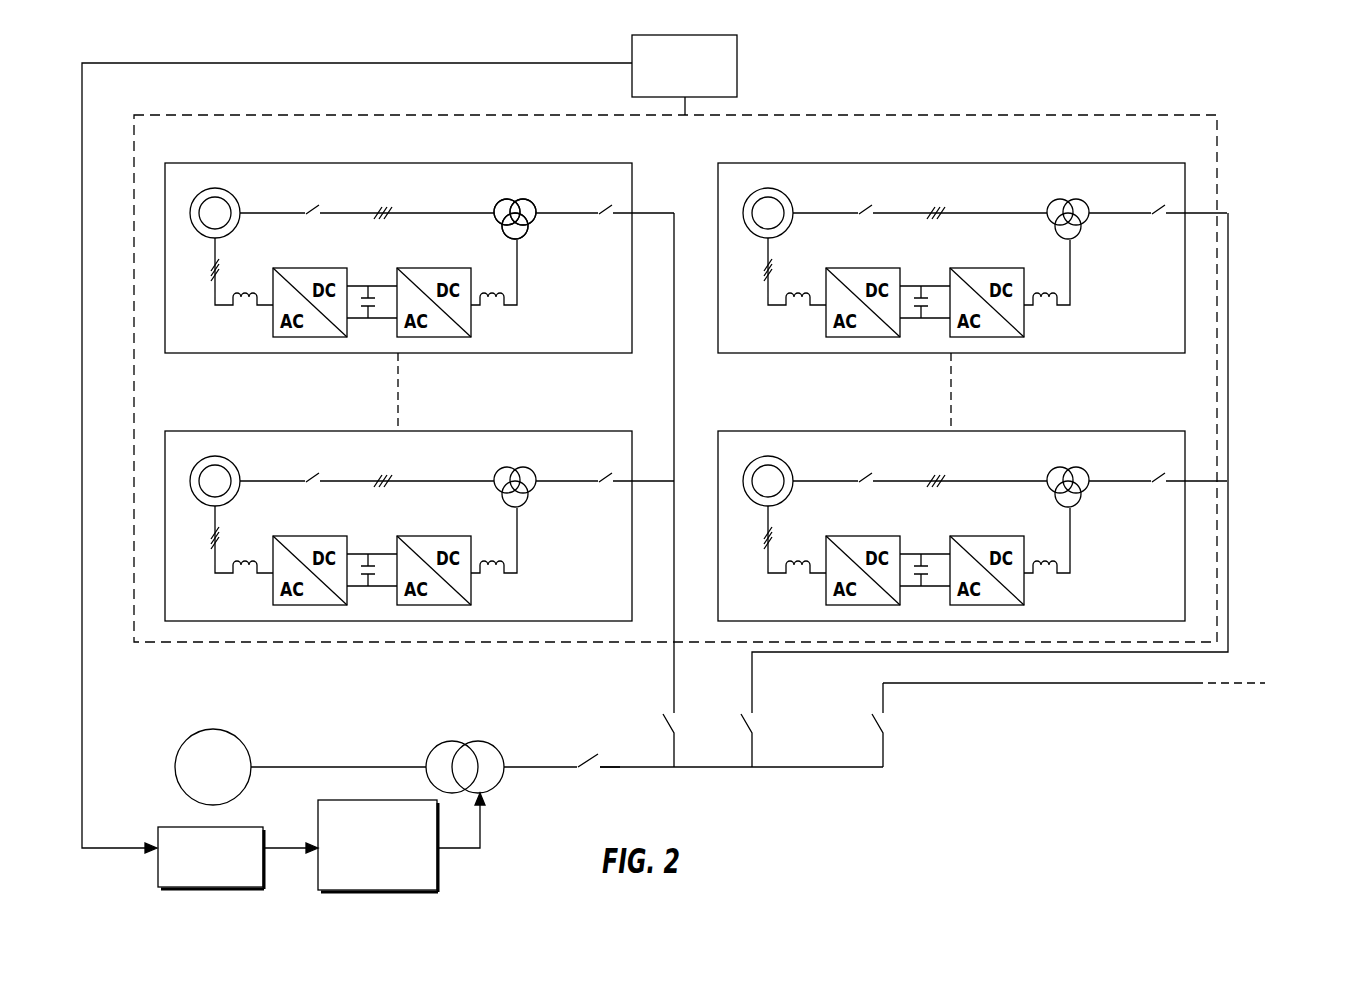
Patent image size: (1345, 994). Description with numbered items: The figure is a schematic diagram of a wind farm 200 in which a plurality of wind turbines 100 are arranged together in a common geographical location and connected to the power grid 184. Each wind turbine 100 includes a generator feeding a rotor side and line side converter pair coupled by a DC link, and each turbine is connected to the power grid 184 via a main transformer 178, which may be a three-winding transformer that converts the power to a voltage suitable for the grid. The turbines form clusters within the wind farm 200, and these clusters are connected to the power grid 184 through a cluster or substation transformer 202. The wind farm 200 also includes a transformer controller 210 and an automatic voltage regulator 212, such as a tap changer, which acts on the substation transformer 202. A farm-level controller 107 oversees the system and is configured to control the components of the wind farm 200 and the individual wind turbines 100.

The wind turbine 100 is at (696, 369).
The farm-level controller 107 is at (665, 82).
The transformer 178 is at (511, 199).
The power grid 184 is at (196, 794).
The wind farm 200 is at (1274, 212).
The substation transformer 202 is at (482, 742).
The transformer controller 210 is at (190, 870).
The automatic voltage regulator 212 is at (440, 862).